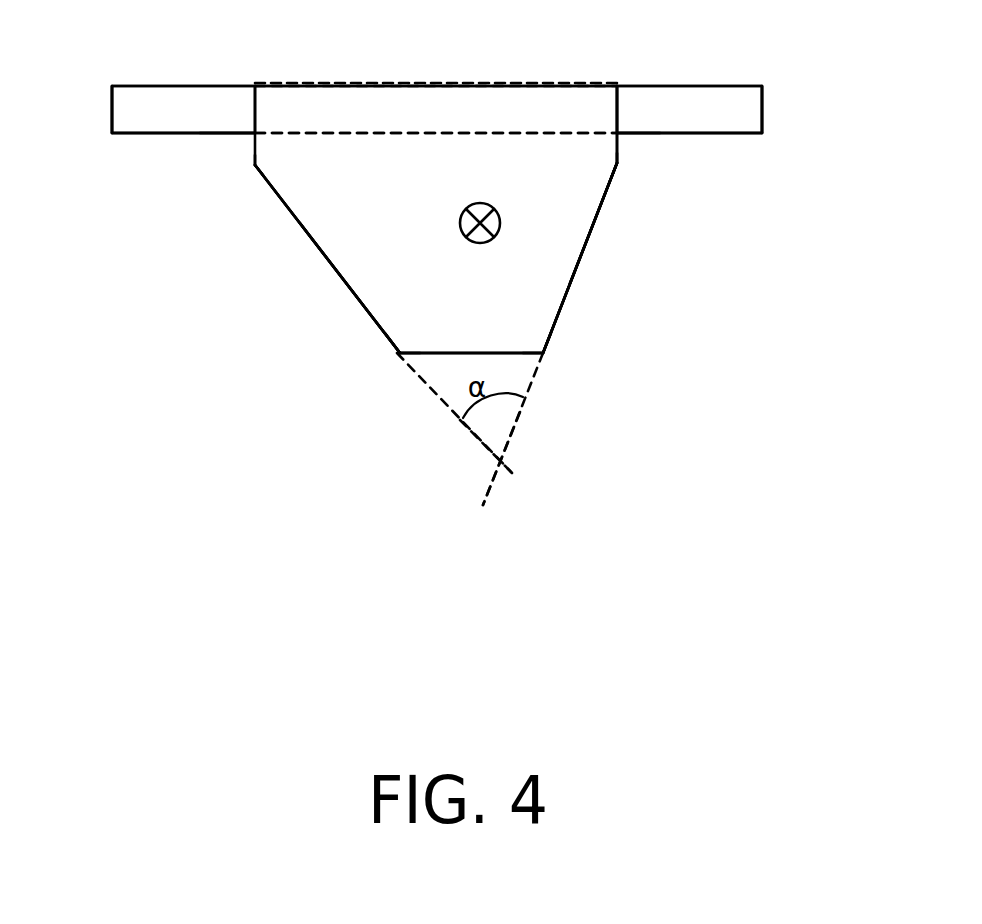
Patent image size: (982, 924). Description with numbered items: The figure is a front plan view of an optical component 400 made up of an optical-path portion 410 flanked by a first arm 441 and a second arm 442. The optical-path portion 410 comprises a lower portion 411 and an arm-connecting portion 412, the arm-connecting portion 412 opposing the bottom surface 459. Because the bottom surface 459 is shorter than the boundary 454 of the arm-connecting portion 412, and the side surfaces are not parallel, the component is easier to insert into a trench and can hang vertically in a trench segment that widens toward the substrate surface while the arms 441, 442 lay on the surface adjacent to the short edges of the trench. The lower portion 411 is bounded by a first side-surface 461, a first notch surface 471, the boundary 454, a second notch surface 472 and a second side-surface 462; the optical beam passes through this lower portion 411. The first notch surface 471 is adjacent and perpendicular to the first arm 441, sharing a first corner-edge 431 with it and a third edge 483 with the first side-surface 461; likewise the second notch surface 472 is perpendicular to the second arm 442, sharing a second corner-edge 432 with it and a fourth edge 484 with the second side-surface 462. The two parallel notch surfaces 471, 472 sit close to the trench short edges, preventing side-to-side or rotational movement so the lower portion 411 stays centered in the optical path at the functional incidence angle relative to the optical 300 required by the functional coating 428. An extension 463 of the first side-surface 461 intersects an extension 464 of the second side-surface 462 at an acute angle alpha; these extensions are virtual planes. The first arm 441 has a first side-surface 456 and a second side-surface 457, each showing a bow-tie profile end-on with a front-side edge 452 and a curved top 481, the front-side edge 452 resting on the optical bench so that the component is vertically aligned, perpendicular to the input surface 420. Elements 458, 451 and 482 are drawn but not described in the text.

The first arm 441 is at (255, 72).
The top surface 458 is at (275, 86).
The boundary 454 is at (368, 133).
The arm-connecting portion 412 is at (502, 103).
The second arm 442 is at (617, 72).
The second side-surface 457 is at (762, 105).
The first side-surface 456 is at (112, 112).
The first flange bottom surface 451 is at (120, 135).
The first corner-edge 431 is at (240, 135).
The first notch surface 471 is at (253, 147).
The third edge 483 is at (252, 167).
The front-side edge 452 is at (743, 133).
The second corner-edge 432 is at (607, 133).
The second notch surface 472 is at (620, 142).
The lower portion 411 is at (843, 127).
The fourth edge 484 is at (620, 163).
The optical 300 is at (458, 228).
The functional coating 428 is at (327, 205).
The first side-surface 461 is at (340, 282).
The bottom surface 459 is at (457, 352).
The second side-surface 462 is at (577, 267).
The input surface 420 is at (545, 300).
The curved top 481 is at (390, 353).
The second lower corner 482 is at (543, 353).
The extension 464 is at (464, 429).
The extension 463 is at (510, 430).
The optical-path portion 410 is at (260, 530).
The optical component 400 is at (520, 630).